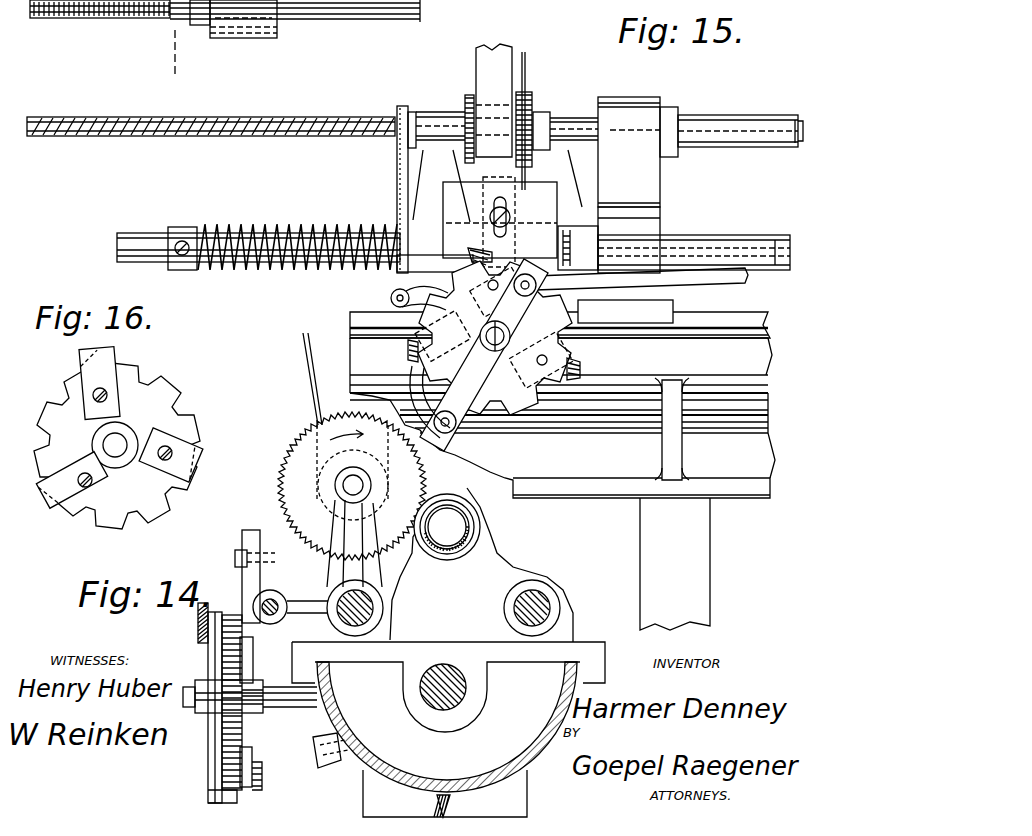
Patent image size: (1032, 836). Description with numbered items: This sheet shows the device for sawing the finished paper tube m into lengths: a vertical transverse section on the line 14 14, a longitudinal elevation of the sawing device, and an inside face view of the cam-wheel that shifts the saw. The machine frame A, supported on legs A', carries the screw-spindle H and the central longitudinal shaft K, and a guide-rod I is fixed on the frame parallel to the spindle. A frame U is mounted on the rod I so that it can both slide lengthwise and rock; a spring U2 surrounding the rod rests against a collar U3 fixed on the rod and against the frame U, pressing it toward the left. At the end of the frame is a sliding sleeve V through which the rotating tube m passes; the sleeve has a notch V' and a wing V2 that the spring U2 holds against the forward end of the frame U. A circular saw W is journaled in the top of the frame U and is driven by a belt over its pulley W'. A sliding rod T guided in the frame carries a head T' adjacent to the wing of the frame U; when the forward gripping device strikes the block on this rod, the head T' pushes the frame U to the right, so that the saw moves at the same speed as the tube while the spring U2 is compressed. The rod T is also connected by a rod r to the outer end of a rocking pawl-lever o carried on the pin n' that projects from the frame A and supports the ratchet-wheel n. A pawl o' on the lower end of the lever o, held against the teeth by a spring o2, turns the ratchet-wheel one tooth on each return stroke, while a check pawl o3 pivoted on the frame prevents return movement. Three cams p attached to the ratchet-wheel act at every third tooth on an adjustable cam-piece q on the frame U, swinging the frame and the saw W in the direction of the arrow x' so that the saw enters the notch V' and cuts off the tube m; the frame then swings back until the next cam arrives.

In FIG. 15, the screw-spindle H is at (225, 22).
In FIG. 14, the screw-spindle H is at (548, 598).
In FIG. 15, the section line 14 14 is at (186, 60).
In FIG. 15, the paper tube m is at (211, 114).
In FIG. 15, the wing V2 is at (420, 189).
In FIG. 15, the pulley W' is at (445, 116).
In FIG. 15, the circular saw W is at (537, 125).
In FIG. 15, the sliding sleeve V is at (700, 184).
In FIG. 14, the sliding sleeve V is at (481, 565).
In FIG. 14, the notch V' is at (430, 568).
In FIG. 15, the cam-piece q is at (520, 222).
In FIG. 14, the cam-piece q is at (242, 539).
In FIG. 15, the cam p is at (480, 250).
In FIG. 14, the cam p is at (582, 368).
In FIG. 16, the cam p is at (117, 349).
In FIG. 15, the head T' is at (578, 236).
In FIG. 14, the head T' is at (274, 593).
In FIG. 15, the sliding rod T is at (694, 237).
In FIG. 14, the sliding rod T is at (282, 618).
In FIG. 15, the guide-rod I is at (249, 247).
In FIG. 14, the guide-rod I is at (383, 606).
In FIG. 15, the collar U3 is at (182, 234).
In FIG. 15, the spring U2 is at (297, 234).
In FIG. 14, the frame U is at (352, 446).
In FIG. 14, the rod r is at (178, 622).
In FIG. 14, the frame A is at (562, 508).
In FIG. 14, the legs A' is at (675, 564).
In FIG. 14, the ratchet-wheel n is at (390, 532).
In FIG. 16, the ratchet-wheel n is at (117, 446).
In FIG. 14, the pin n' is at (346, 525).
In FIG. 14, the rocking pawl-lever o is at (364, 500).
In FIG. 14, the pawl o' is at (345, 571).
In FIG. 14, the spring o2 is at (456, 438).
In FIG. 14, the pawl o3 is at (392, 291).
In FIG. 14, the arrow x' is at (346, 429).
In FIG. 14, the central longitudinal shaft K is at (470, 703).
In FIG. 14, the connecting arm w is at (296, 601).